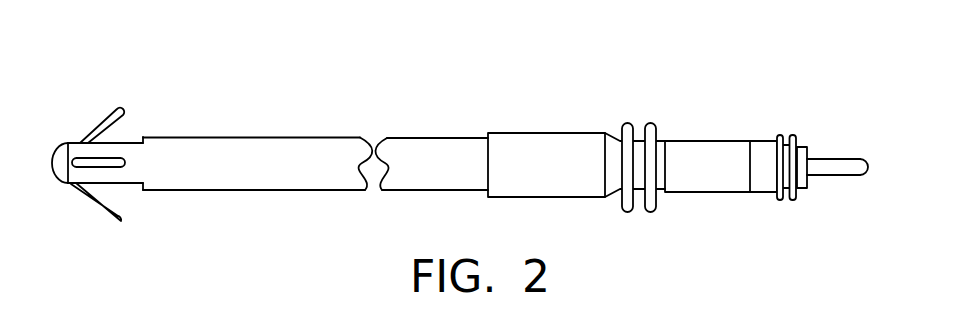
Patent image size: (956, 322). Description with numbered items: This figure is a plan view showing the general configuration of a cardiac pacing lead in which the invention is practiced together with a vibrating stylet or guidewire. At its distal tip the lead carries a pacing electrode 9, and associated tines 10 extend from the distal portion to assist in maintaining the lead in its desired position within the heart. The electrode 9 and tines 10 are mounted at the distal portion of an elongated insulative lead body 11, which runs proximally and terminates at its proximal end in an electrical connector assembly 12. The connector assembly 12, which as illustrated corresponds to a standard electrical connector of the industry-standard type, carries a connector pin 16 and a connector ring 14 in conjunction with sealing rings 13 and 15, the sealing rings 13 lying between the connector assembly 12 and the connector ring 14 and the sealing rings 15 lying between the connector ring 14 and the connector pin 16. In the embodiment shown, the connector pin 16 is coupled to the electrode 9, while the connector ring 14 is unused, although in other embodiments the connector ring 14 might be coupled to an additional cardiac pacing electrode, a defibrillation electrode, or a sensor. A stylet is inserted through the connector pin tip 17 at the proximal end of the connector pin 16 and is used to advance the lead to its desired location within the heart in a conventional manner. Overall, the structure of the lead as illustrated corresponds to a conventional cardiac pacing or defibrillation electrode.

The pacing electrode 9 is at (57, 146).
The tines 10 is at (123, 111).
The elongated insulative lead body 11 is at (263, 137).
The electrical connector assembly 12 is at (538, 133).
The sealing rings 13 is at (653, 123).
The connector ring 14 is at (705, 142).
The sealing rings 15 is at (792, 135).
The connector pin 16 is at (832, 176).
The connector pin tip 17 is at (858, 162).